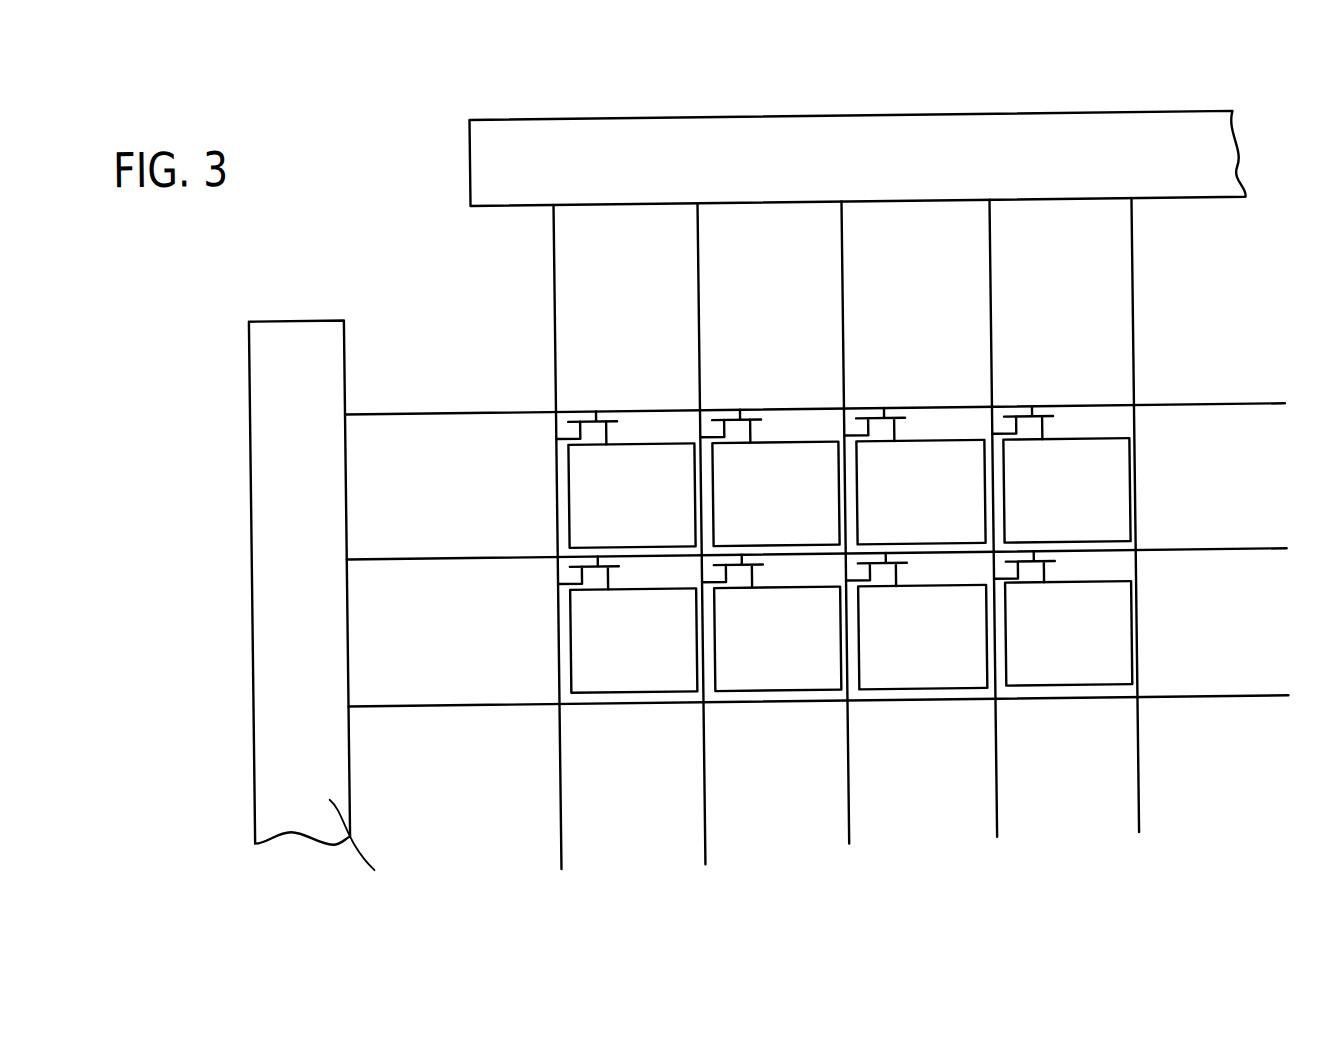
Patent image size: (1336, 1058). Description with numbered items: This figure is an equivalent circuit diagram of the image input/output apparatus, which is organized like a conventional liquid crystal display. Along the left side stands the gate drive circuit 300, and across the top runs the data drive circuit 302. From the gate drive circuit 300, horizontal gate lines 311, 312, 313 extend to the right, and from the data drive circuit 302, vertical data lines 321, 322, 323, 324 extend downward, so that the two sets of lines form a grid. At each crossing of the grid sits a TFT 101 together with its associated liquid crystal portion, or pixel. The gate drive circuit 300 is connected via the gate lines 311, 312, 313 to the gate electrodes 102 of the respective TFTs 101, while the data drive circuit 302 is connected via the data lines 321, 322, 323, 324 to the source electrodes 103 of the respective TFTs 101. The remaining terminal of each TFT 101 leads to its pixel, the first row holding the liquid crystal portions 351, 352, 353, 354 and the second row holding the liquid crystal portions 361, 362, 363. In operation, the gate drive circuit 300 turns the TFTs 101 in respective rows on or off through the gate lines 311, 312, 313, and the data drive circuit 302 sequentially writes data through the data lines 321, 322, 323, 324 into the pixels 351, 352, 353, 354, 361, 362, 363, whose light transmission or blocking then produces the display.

The gate drive circuit 300 is at (297, 317).
The data drive circuit 302 is at (1072, 118).
The gate line 311 is at (373, 411).
The gate line 312 is at (364, 558).
The gate line 313 is at (372, 705).
The data line 321 is at (557, 283).
The data line 322 is at (701, 283).
The data line 323 is at (845, 278).
The data line 324 is at (993, 280).
The TFT 101 is at (608, 413).
The gate electrode 102 is at (592, 418).
The source electrode 103 is at (572, 430).
The liquid crystal portion (pixel) 351 is at (594, 517).
The liquid crystal portion (pixel) 352 is at (738, 517).
The liquid crystal portion (pixel) 353 is at (882, 517).
The liquid crystal portion (pixel) 354 is at (1030, 515).
The liquid crystal portion (pixel) 361 is at (594, 662).
The liquid crystal portion (pixel) 362 is at (738, 662).
The liquid crystal portion (pixel) 363 is at (882, 662).